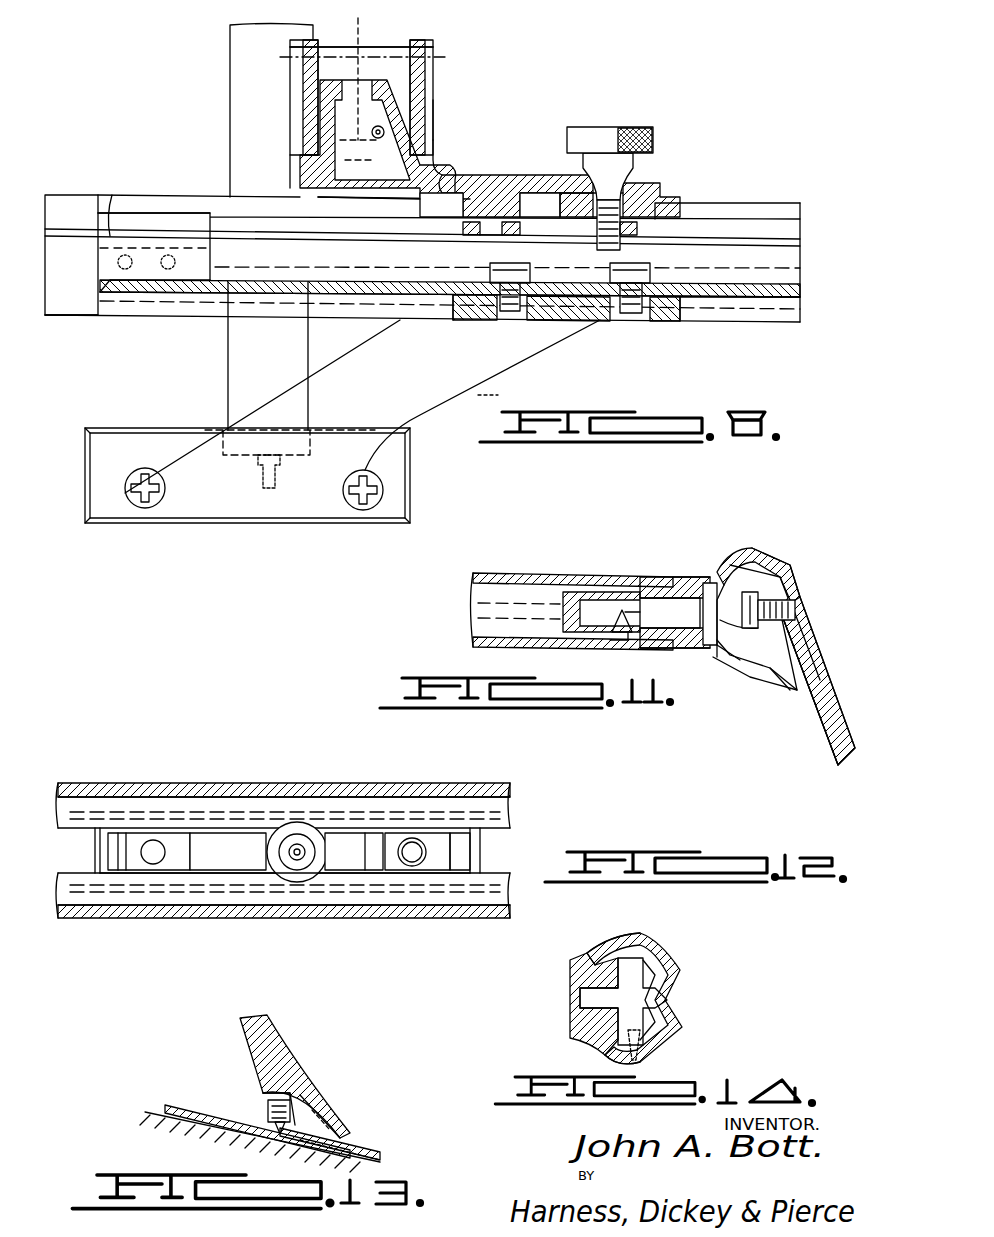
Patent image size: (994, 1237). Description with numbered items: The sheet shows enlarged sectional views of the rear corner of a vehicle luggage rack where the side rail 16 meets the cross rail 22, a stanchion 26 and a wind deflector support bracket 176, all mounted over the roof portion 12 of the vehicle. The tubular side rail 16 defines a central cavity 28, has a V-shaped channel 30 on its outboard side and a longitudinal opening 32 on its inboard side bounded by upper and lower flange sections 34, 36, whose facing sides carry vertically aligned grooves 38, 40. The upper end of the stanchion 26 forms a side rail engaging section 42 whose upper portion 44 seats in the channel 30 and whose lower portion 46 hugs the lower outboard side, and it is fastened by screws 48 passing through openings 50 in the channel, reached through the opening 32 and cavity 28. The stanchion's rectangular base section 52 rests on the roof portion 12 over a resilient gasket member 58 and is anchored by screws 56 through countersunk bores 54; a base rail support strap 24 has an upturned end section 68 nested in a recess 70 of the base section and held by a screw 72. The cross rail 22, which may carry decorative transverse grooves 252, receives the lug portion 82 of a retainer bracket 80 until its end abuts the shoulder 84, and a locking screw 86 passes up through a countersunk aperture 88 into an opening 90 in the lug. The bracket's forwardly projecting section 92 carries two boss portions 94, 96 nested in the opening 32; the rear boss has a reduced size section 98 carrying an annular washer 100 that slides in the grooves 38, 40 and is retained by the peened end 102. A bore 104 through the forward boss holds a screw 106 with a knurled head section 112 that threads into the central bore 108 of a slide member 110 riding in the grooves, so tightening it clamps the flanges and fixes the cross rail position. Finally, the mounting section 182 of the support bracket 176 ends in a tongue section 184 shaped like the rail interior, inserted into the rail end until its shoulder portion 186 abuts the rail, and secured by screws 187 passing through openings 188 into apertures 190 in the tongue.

In FIG. 13, the roof portion 12 is at (160, 1112).
In FIG. 11, the side rail 16 is at (741, 549).
In FIG. 12, the side rail 16 is at (311, 784).
In FIG. 14, the side rail 16 is at (668, 950).
In FIG. 8, the cross rail 22 is at (442, 128).
In FIG. 11, the cross rail 22 is at (505, 571).
In FIG. 13, the base rail support strap 24 is at (172, 1102).
In FIG. 8, the stanchion 26 is at (486, 392).
In FIG. 11, the stanchion 26 is at (828, 740).
In FIG. 13, the stanchion 26 is at (276, 1020).
In FIG. 8, the central cavity 28 is at (776, 272).
In FIG. 11, the central cavity 28 is at (757, 572).
In FIG. 14, the central cavity 28 is at (633, 1000).
In FIG. 8, the V-shaped channel 30 is at (760, 305).
In FIG. 11, the V-shaped channel 30 is at (765, 676).
In FIG. 8, the longitudinal opening 32 is at (738, 205).
In FIG. 11, the longitudinal opening 32 is at (660, 650).
In FIG. 12, the longitudinal opening 32 is at (506, 838).
In FIG. 11, the upper flange section 34 is at (675, 576).
In FIG. 11, the lower flange section 36 is at (703, 648).
In FIG. 11, the groove 38 is at (670, 613).
In FIG. 12, the groove 38 is at (215, 800).
In FIG. 11, the groove 40 is at (722, 670).
In FIG. 12, the groove 40 is at (202, 905).
In FIG. 11, the side rail engaging section 42 is at (815, 622).
In FIG. 11, the upper portion 44 is at (802, 600).
In FIG. 11, the lower portion 46 is at (786, 700).
In FIG. 8, the screw 48 is at (532, 270).
In FIG. 11, the screw 48 is at (750, 604).
In FIG. 8, the opening 50 is at (504, 312).
In FIG. 11, the opening 50 is at (780, 600).
In FIG. 8, the base section 52 is at (200, 500).
In FIG. 13, the base section 52 is at (300, 1090).
In FIG. 8, the countersunk bore 54 is at (137, 505).
In FIG. 13, the countersunk bore 54 is at (330, 1096).
In FIG. 8, the screw 56 is at (146, 468).
In FIG. 13, the screw 56 is at (326, 1156).
In FIG. 13, the gasket member 58 is at (356, 1149).
In FIG. 13, the upturned end section 68 is at (272, 1118).
In FIG. 8, the recess 70 is at (312, 432).
In FIG. 13, the recess 70 is at (262, 1105).
In FIG. 8, the screw 72 is at (284, 470).
In FIG. 13, the screw 72 is at (272, 1130).
In FIG. 8, the retainer bracket 80 is at (474, 176).
In FIG. 11, the retainer bracket 80 is at (654, 576).
In FIG. 12, the retainer bracket 80 is at (92, 855).
In FIG. 8, the lug portion 82 is at (434, 112).
In FIG. 11, the lug portion 82 is at (565, 592).
In FIG. 8, the shoulder 84 is at (436, 152).
In FIG. 11, the locking screw 86 is at (618, 642).
In FIG. 8, the countersunk aperture 88 is at (360, 160).
In FIG. 11, the countersunk aperture 88 is at (620, 648).
In FIG. 8, the opening 90 is at (371, 132).
In FIG. 11, the opening 90 is at (632, 588).
In FIG. 8, the forwardly projecting section 92 is at (505, 186).
In FIG. 8, the boss portion 94 is at (450, 207).
In FIG. 12, the boss portion 94 is at (280, 828).
In FIG. 8, the boss portion 96 is at (632, 195).
In FIG. 12, the boss portion 96 is at (372, 834).
In FIG. 8, the reduced size section 98 is at (478, 253).
In FIG. 8, the annular washer 100 is at (462, 228).
In FIG. 11, the annular washer 100 is at (710, 584).
In FIG. 12, the annular washer 100 is at (262, 852).
In FIG. 8, the peened end 102 is at (530, 220).
In FIG. 11, the peened end 102 is at (748, 640).
In FIG. 12, the peened end 102 is at (312, 843).
In FIG. 8, the bore 104 is at (598, 192).
In FIG. 8, the screw 106 is at (628, 124).
In FIG. 12, the screw 106 is at (430, 842).
In FIG. 8, the central bore 108 is at (592, 268).
In FIG. 8, the slide member 110 is at (642, 231).
In FIG. 12, the slide member 110 is at (442, 858).
In FIG. 8, the knurled head section 112 is at (586, 125).
In FIG. 8, the support bracket 176 is at (62, 322).
In FIG. 8, the mounting section 182 is at (68, 198).
In FIG. 8, the tongue section 184 is at (170, 228).
In FIG. 14, the tongue section 184 is at (642, 950).
In FIG. 8, the shoulder portion 186 is at (112, 193).
In FIG. 14, the screw 187 is at (645, 1060).
In FIG. 8, the opening 188 is at (112, 262).
In FIG. 14, the opening 188 is at (636, 1064).
In FIG. 8, the aperture 190 is at (108, 291).
In FIG. 14, the aperture 190 is at (593, 1047).
In FIG. 8, the transverse groove 252 is at (442, 118).